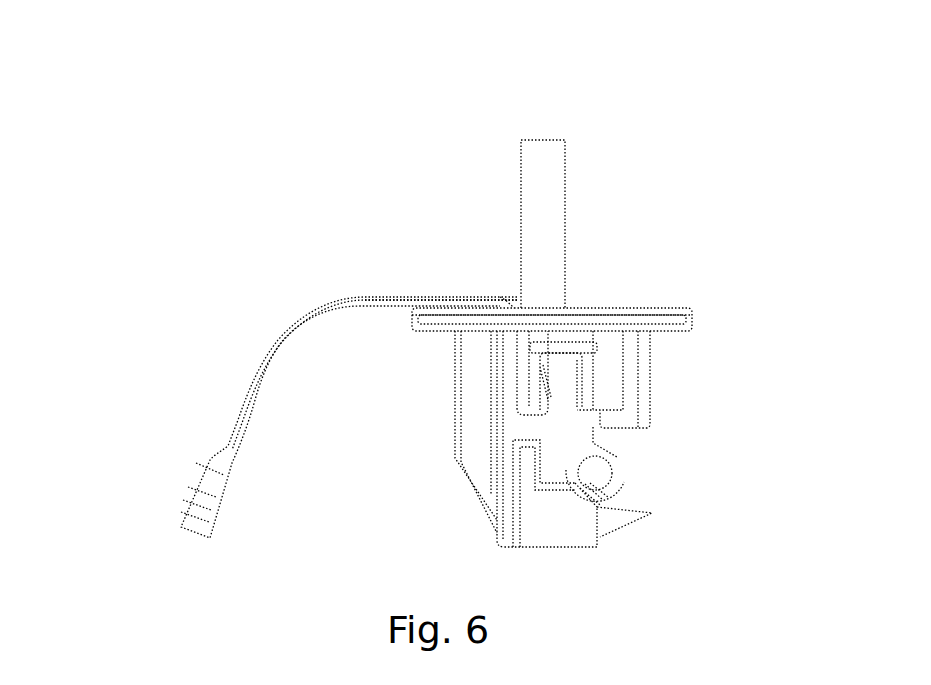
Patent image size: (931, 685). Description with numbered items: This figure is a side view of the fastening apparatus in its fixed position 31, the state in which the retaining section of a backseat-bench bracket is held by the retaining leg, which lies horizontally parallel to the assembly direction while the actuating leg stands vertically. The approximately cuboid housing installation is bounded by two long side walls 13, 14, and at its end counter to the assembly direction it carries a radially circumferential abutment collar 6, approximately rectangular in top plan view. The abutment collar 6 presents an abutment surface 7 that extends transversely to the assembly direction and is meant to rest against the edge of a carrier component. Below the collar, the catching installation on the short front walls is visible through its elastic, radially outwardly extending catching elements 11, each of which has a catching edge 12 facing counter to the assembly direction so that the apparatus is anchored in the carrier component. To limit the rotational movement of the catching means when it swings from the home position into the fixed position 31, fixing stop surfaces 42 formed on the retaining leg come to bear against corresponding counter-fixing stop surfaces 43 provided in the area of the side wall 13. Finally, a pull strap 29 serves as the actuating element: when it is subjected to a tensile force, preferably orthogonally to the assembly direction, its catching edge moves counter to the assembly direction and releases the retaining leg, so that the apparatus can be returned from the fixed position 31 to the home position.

The abutment collar 6 is at (672, 306).
The abutment surface 7 is at (690, 340).
The catching elements 11 is at (555, 373).
The catching edges 12 is at (568, 343).
The side wall 13 is at (653, 410).
The side wall 14 is at (490, 453).
The pull strap 29 is at (277, 337).
The fixed position 31 is at (138, 117).
The fixing stop surfaces 42 is at (615, 432).
The counter-fixing stop surfaces 43 is at (703, 515).